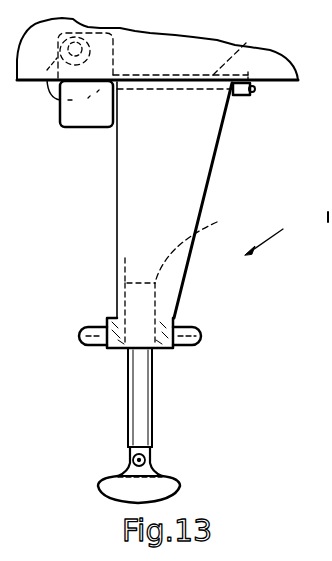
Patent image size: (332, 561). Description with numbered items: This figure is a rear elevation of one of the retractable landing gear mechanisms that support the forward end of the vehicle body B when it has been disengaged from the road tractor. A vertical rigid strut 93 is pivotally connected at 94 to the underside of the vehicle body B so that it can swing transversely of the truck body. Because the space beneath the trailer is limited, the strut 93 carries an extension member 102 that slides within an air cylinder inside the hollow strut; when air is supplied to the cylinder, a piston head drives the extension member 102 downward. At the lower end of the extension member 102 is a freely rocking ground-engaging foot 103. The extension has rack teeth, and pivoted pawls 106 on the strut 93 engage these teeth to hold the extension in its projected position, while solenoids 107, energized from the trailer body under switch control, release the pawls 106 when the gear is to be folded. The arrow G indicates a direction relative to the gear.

The vehicle body B is at (143, 47).
The pivotal connection 94 is at (247, 42).
The vertical rigid strut 93 is at (197, 188).
The pivoted pawls 106 is at (184, 280).
The solenoids 107 is at (197, 327).
The extension member 102 is at (147, 390).
The ground-engaging foot 103 is at (165, 483).
The direction of gravity G is at (271, 239).